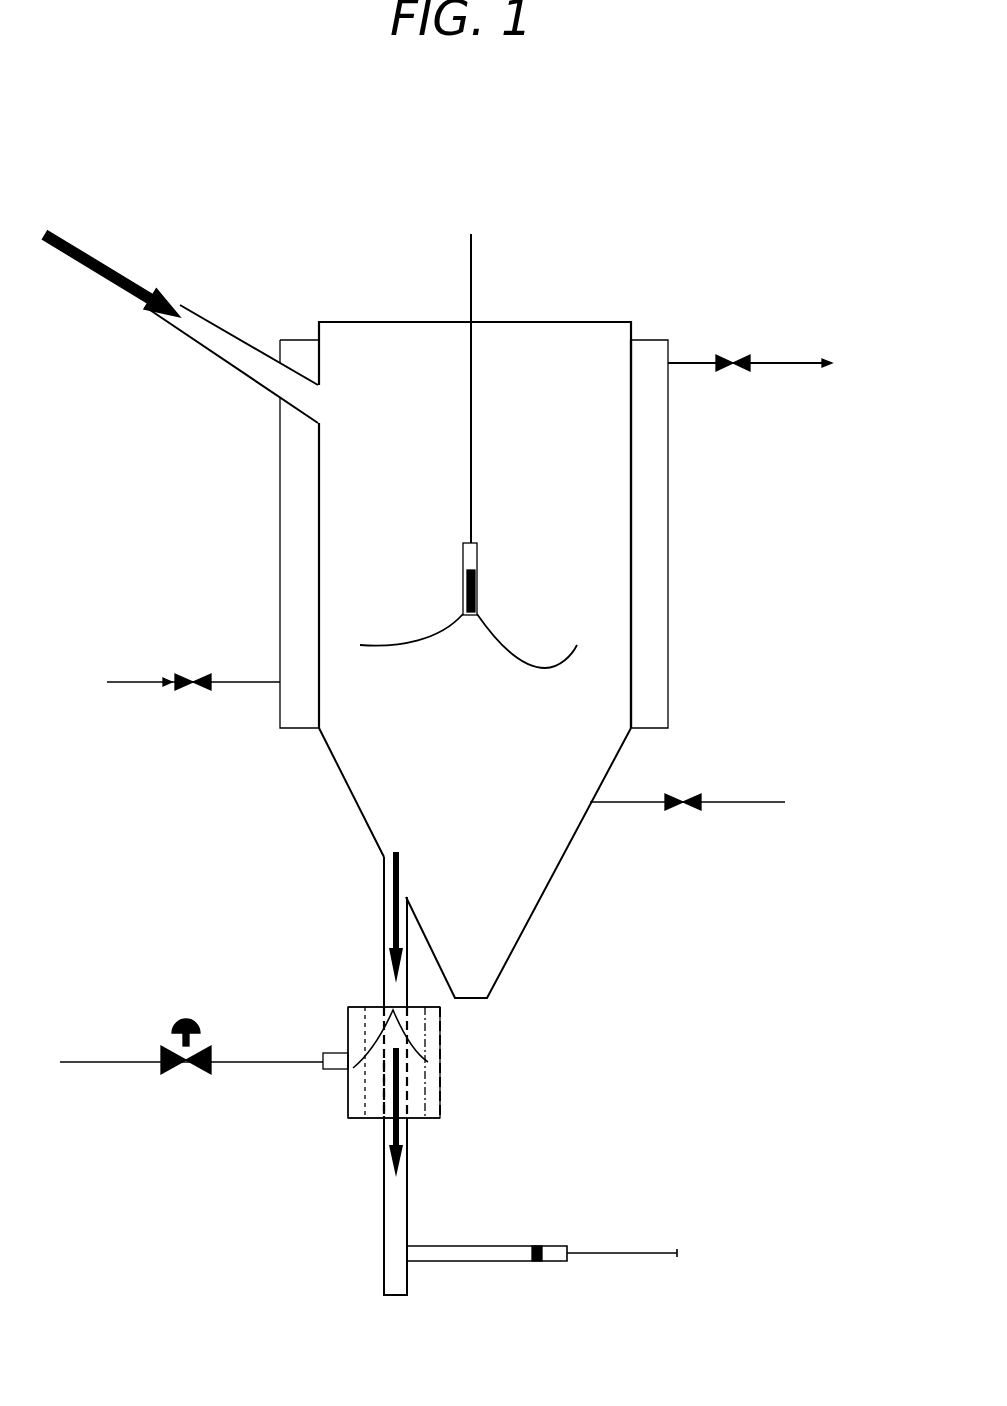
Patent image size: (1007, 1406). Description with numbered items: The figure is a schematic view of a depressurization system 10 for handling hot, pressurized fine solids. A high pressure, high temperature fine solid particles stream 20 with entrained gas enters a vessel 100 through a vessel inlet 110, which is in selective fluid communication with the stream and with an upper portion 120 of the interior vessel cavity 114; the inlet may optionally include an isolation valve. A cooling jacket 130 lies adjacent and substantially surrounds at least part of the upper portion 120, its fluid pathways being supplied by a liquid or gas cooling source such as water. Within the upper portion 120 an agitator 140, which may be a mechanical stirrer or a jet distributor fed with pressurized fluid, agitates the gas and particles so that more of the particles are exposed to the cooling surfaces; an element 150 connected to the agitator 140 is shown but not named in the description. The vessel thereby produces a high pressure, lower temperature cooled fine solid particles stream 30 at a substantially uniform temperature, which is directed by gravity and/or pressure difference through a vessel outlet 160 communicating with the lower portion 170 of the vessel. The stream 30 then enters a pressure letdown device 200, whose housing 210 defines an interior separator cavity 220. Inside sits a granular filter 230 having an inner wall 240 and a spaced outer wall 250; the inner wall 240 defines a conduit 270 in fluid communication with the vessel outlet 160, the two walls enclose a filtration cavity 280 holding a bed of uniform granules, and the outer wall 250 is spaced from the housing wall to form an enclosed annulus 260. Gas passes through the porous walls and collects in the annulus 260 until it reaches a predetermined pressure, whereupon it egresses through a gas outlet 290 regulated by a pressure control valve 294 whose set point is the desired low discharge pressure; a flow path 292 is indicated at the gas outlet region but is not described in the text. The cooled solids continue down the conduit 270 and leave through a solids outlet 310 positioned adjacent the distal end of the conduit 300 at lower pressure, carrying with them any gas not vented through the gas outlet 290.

The depressurization system 10 is at (160, 465).
The high pressure, high temperature fine solid particles stream 20 is at (107, 280).
The high pressure, lower temperature cooled fine solid particles stream 30 is at (403, 885).
The vessel 100 is at (382, 322).
The vessel inlet 110 is at (177, 303).
The interior vessel cavity 114 is at (440, 683).
The upper portion 120 is at (602, 418).
The cooling jacket 130 is at (647, 495).
The agitator 140 is at (478, 556).
The agitator shaft 150 is at (471, 234).
The vessel outlet 160 is at (385, 858).
The lower portion 170 is at (517, 863).
The pressure letdown device 200 is at (457, 1035).
The housing 210 is at (440, 1087).
The interior separator cavity 220 is at (368, 1002).
The granular filter 230 is at (380, 932).
The inner wall 240 is at (380, 1092).
The outer wall 250 is at (350, 1008).
The enclosed annulus 260 is at (357, 1082).
The conduit 270 is at (387, 1113).
The enclosed filtration cavity 280 is at (415, 1090).
The gas outlet 290 is at (323, 1052).
The fluid flow path 292 is at (353, 1068).
The pressure control valve 294 is at (166, 1030).
The conduit distal end 300 is at (410, 1123).
The solids outlet 310 is at (418, 1248).